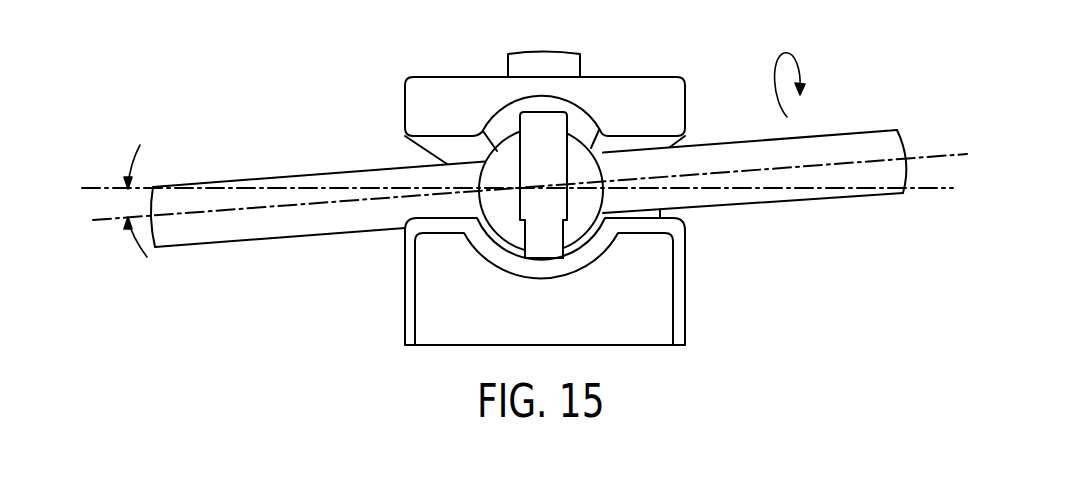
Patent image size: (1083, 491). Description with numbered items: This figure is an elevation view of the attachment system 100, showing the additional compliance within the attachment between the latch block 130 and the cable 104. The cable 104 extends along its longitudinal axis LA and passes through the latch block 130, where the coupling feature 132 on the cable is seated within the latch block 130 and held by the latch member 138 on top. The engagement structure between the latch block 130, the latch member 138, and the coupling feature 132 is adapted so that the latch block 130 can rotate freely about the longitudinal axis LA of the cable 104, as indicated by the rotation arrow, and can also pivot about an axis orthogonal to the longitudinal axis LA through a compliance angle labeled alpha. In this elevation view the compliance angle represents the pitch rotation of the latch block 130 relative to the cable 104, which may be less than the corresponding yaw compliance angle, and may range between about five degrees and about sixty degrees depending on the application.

The attachment system 100 is at (524, 201).
The cable 104 is at (192, 233).
The latch block 130 is at (625, 318).
The coupling feature 132 is at (508, 170).
The latch member 138 is at (547, 60).
The longitudinal axis LA is at (932, 157).